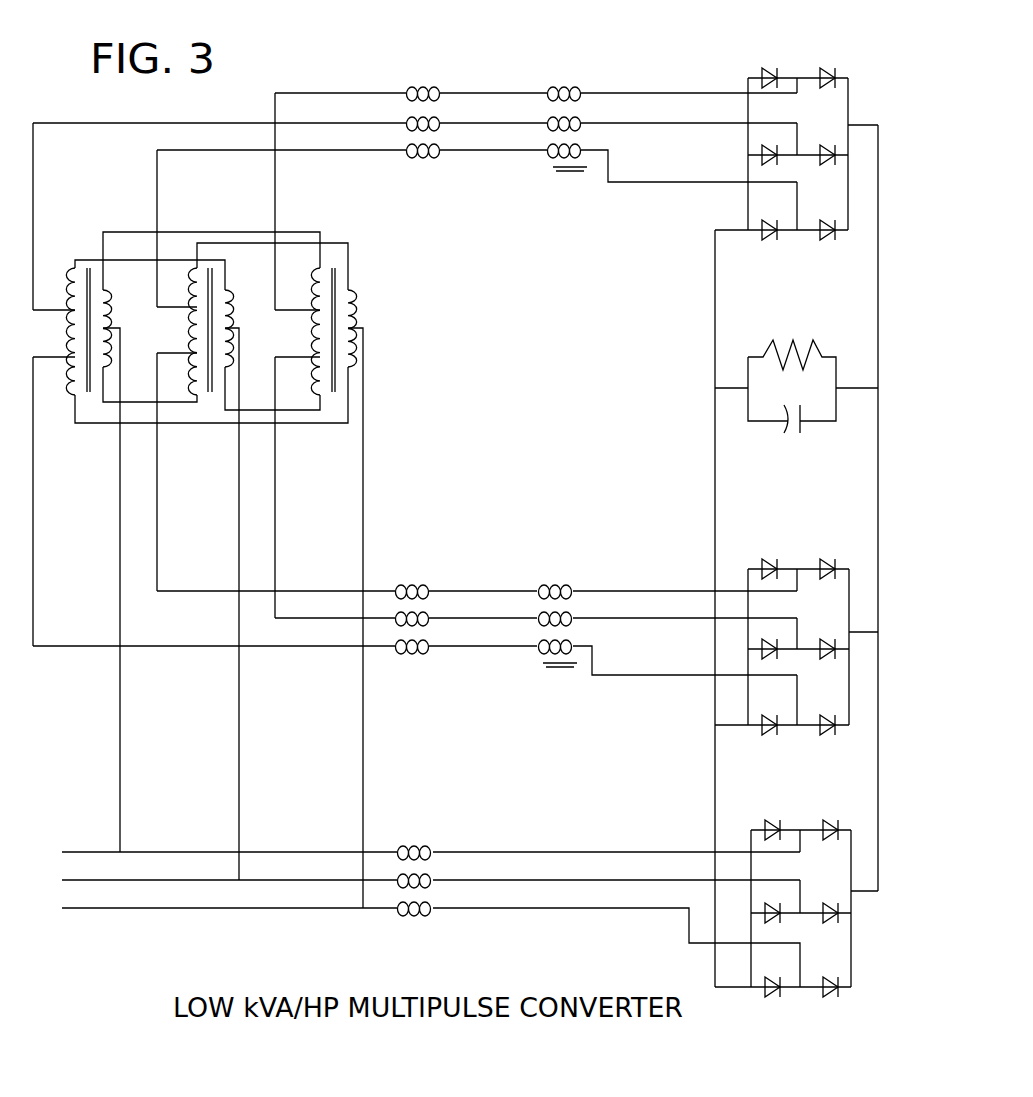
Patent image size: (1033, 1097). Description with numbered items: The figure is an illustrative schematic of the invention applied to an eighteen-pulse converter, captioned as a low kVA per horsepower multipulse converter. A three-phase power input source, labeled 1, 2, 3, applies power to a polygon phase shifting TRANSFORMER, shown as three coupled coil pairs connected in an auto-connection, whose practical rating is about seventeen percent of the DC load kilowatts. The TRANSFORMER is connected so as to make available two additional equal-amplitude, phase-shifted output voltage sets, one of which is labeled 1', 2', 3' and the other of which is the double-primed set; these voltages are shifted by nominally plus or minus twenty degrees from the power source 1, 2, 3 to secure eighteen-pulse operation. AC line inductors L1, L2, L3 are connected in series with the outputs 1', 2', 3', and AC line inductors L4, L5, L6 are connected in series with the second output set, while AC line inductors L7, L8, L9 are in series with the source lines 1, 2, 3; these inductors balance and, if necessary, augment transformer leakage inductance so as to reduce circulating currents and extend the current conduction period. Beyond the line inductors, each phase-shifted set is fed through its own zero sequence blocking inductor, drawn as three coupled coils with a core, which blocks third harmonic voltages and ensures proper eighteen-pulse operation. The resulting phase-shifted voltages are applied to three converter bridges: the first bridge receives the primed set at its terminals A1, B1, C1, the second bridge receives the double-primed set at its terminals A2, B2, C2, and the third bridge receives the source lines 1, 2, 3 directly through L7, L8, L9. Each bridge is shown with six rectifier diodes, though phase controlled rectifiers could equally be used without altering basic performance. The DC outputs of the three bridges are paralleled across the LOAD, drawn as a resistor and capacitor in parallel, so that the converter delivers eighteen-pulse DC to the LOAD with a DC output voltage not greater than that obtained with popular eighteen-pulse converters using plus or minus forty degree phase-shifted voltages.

The three-phase power input source line 1 is at (421, 843).
The three-phase power input source line 2 is at (421, 888).
The three-phase power input source line 3 is at (421, 940).
The phase-shifted output voltage 1' is at (536, 345).
The phase-shifted output voltage 2' is at (415, 373).
The phase-shifted output voltage 3' is at (477, 360).
The AC line inductor L1 is at (438, 90).
The AC line inductor L2 is at (438, 120).
The AC line inductor L3 is at (438, 147).
The AC line inductor L4 is at (428, 588).
The AC line inductor L5 is at (428, 615).
The AC line inductor L6 is at (428, 643).
The AC line inductor L7 is at (431, 849).
The AC line inductor L8 is at (431, 877).
The AC line inductor L9 is at (431, 905).
The converter terminal A1 is at (732, 79).
The converter terminal B1 is at (733, 126).
The converter terminal C1 is at (736, 194).
The converter terminal A2 is at (726, 578).
The converter terminal B2 is at (726, 622).
The converter terminal C2 is at (726, 689).
The DC load LOAD is at (796, 368).
The polygon phase shifting transformer TRANSFORMER is at (353, 302).